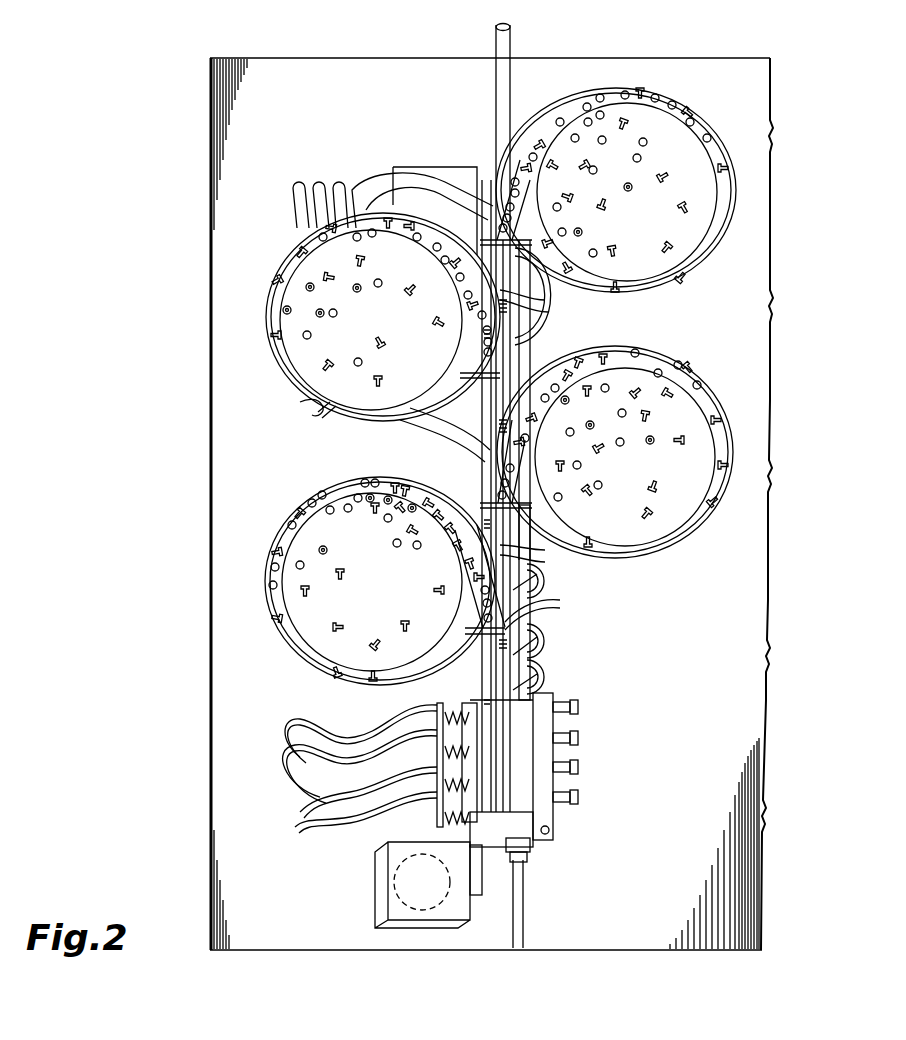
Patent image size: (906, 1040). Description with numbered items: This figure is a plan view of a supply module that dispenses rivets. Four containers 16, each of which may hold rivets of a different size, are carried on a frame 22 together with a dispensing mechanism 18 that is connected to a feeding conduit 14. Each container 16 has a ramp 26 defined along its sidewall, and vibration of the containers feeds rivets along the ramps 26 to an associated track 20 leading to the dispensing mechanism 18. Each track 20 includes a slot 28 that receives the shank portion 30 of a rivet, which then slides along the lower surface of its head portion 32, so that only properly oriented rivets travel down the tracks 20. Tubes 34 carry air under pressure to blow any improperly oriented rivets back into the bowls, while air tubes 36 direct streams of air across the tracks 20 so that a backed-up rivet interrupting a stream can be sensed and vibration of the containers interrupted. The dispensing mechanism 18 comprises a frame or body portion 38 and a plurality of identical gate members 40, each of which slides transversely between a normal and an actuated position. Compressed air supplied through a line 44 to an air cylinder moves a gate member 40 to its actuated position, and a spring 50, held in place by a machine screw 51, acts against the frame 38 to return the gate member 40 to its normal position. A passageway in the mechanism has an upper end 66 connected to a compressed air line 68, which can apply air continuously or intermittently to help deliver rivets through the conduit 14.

The conduit 14 is at (511, 47).
The container 16 is at (737, 203).
The dispensing mechanism 18 is at (582, 786).
The track 20 is at (505, 330).
The frame 22 is at (210, 712).
The ramp 26 is at (500, 200).
The slot 28 is at (520, 285).
The shank portion 30 is at (318, 410).
The head portion 32 is at (300, 405).
The tube 34 is at (407, 180).
The air tube 36 is at (560, 578).
The frame or body portion 38 is at (540, 845).
The gate member 40 is at (560, 708).
The line 44 is at (353, 747).
The spring 50 is at (440, 820).
The machine screw 51 is at (437, 722).
The upper end 66 is at (500, 850).
The compressed air line 68 is at (518, 910).